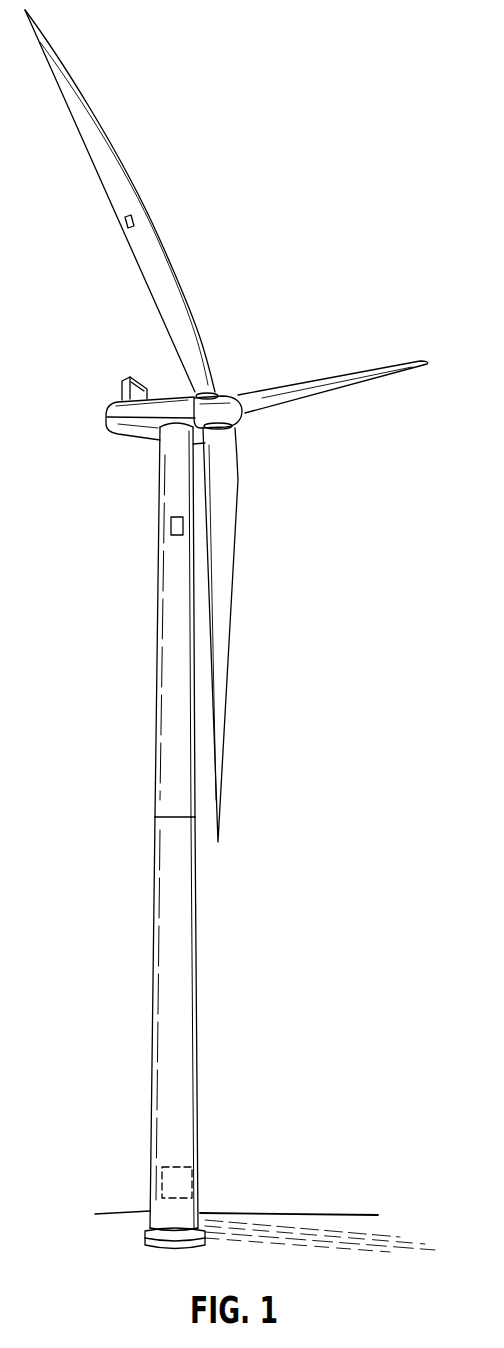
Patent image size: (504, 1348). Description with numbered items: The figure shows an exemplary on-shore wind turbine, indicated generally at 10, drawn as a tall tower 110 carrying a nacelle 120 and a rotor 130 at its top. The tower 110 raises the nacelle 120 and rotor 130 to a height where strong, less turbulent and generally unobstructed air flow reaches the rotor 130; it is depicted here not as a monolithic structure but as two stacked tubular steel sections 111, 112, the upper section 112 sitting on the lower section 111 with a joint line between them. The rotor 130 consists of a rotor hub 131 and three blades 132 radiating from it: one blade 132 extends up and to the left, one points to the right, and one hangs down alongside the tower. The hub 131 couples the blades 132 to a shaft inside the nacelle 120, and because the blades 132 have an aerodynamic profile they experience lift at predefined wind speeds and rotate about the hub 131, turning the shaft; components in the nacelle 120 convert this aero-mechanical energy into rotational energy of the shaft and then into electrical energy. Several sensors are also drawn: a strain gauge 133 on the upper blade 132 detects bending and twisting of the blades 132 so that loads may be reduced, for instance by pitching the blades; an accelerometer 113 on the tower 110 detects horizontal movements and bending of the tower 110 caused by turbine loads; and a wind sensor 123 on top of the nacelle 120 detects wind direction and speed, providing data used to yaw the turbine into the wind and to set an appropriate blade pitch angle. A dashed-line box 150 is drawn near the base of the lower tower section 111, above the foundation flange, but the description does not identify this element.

The wind turbine 10 is at (357, 247).
The tower 110 is at (152, 688).
The tubular steel section 111 is at (160, 1012).
The tubular steel section 112 is at (163, 603).
The accelerometer 113 is at (171, 526).
The nacelle 120 is at (100, 417).
The wind sensor 123 is at (128, 378).
The rotor 130 is at (235, 422).
The rotor hub 131 is at (217, 391).
The blade 132 is at (63, 101).
The strain gauge 133 is at (125, 221).
The foundation / base unit 150 is at (162, 1177).